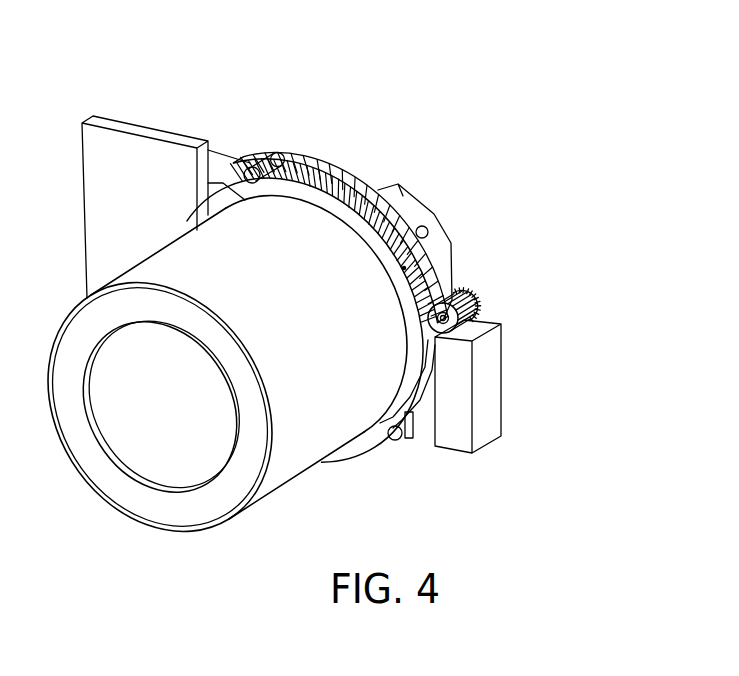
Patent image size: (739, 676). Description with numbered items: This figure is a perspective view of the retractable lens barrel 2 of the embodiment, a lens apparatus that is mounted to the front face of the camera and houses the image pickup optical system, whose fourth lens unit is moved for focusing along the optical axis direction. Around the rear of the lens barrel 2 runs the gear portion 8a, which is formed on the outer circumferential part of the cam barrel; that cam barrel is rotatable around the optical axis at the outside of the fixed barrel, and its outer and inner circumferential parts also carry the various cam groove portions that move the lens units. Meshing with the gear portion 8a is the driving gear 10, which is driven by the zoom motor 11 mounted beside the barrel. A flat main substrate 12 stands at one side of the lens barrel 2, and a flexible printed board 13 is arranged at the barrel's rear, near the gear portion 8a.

The lens barrel 2 is at (287, 283).
The gear portion 8a is at (407, 212).
The driving gear 10 is at (478, 307).
The zoom motor 11 is at (488, 397).
The main substrate 12 is at (147, 163).
The flexible printed board 13 is at (237, 163).